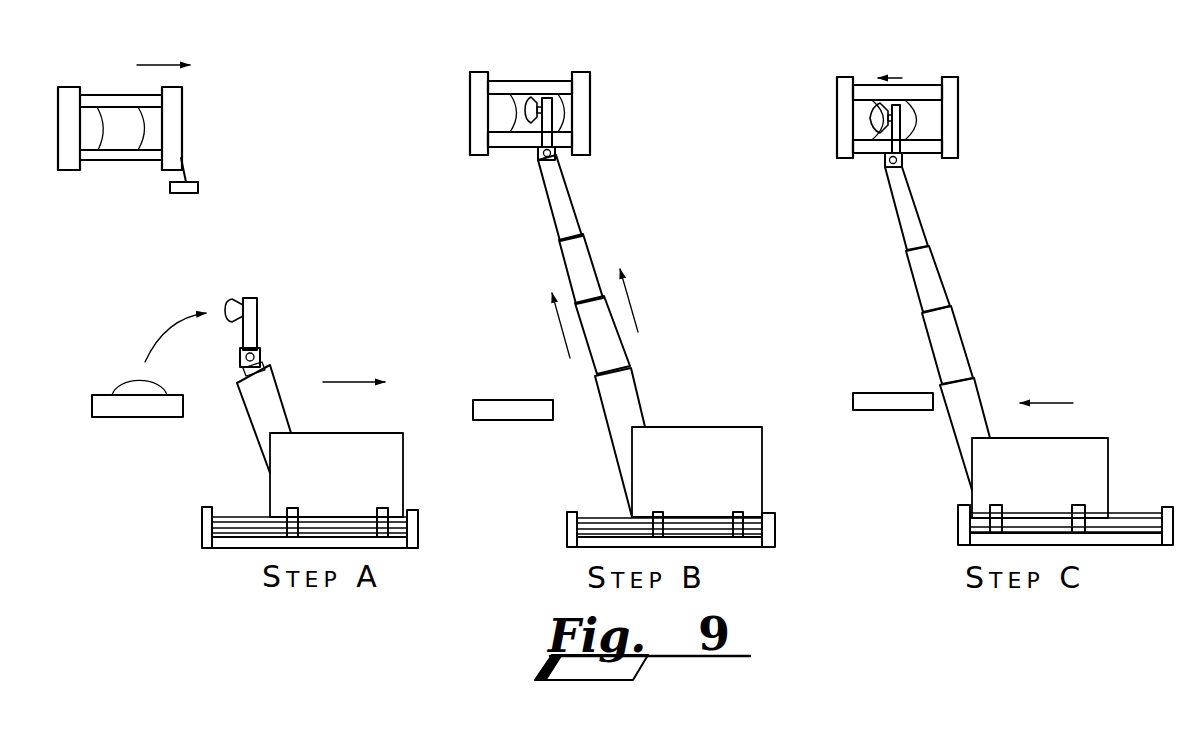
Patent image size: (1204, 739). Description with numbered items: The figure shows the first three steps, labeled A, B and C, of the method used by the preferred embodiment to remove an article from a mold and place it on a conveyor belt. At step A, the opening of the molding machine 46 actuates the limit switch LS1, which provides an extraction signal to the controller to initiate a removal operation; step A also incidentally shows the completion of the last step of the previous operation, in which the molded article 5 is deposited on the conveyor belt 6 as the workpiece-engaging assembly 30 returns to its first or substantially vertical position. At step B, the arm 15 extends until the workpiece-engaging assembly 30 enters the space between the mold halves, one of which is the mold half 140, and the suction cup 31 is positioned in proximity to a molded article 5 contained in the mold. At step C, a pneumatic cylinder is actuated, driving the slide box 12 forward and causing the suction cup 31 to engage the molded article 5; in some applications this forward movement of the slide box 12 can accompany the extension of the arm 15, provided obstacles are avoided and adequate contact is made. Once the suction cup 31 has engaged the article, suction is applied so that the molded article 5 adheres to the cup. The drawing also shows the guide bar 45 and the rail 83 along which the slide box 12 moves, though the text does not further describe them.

The molded article 5 is at (125, 387).
The conveyor belt 6 is at (135, 408).
The slide box 12 is at (403, 450).
The arm 15 is at (284, 380).
The workpiece-engaging assembly 30 is at (268, 327).
The suction cup 31 is at (528, 107).
The lower guide bar 45 is at (508, 143).
The molding machine 46 is at (210, 104).
The guide rail 83 is at (352, 518).
The mold half 140 is at (590, 124).
The limit switch LS1 is at (199, 187).